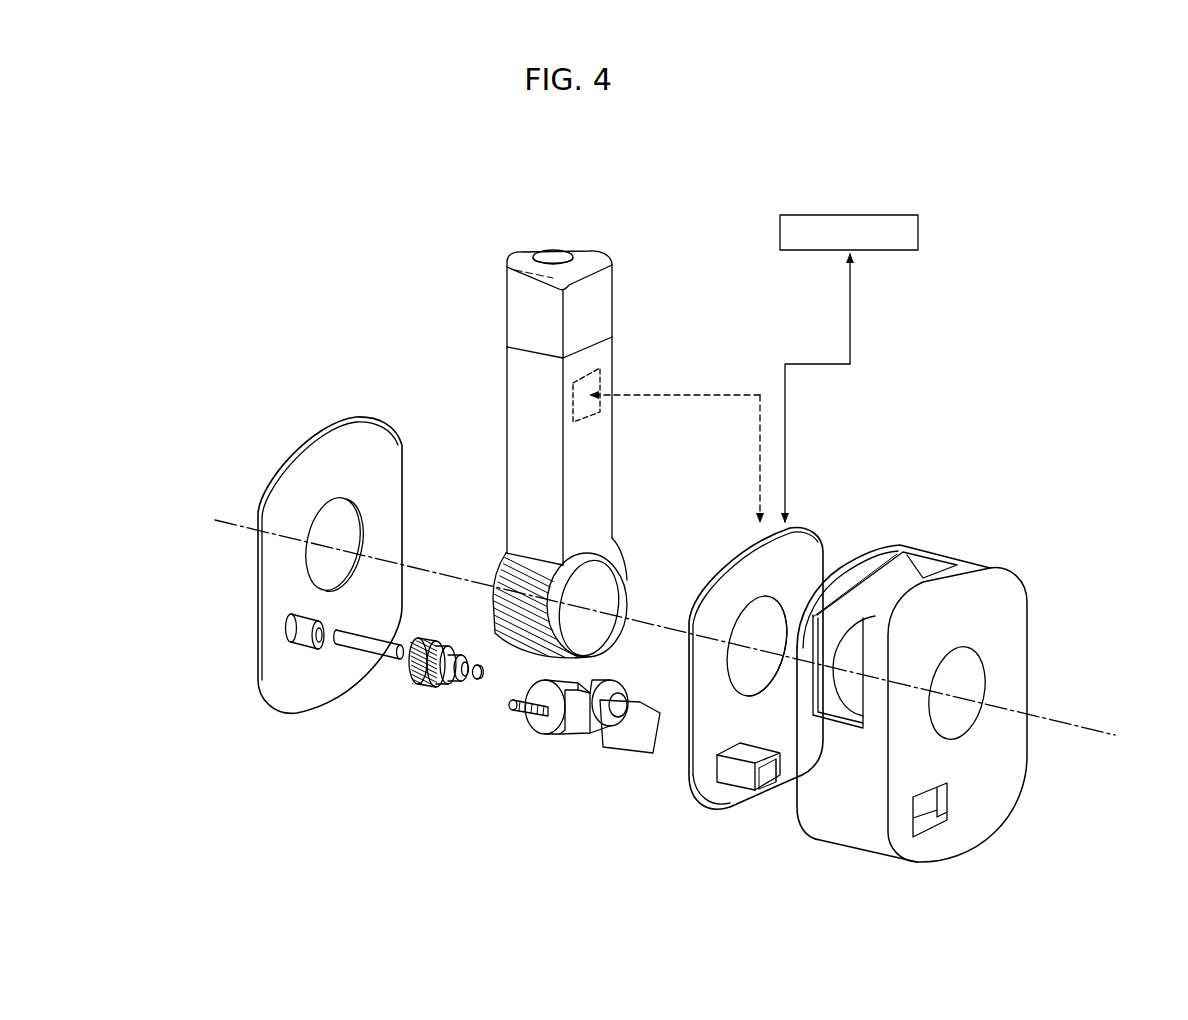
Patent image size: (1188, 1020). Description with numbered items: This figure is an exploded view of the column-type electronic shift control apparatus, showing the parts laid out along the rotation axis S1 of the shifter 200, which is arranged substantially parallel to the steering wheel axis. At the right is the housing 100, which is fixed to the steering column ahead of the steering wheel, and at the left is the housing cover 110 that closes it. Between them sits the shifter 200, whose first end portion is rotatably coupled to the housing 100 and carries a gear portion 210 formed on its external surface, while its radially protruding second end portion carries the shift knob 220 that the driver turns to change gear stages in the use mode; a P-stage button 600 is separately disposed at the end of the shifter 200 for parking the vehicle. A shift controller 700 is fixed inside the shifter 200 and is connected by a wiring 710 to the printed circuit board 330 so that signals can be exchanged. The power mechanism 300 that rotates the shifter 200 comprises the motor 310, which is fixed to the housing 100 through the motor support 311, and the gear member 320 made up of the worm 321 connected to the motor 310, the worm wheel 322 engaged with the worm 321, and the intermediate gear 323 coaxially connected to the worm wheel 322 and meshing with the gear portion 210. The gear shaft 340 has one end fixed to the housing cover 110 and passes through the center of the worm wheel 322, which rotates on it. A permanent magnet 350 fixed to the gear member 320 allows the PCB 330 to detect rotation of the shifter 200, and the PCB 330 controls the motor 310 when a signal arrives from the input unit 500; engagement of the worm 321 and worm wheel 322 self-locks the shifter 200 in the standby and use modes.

The housing 100 is at (1010, 606).
The housing cover 110 is at (345, 440).
The shifter 200 is at (559, 466).
The gear portion 210 is at (492, 612).
The shift knob 220 is at (520, 276).
The power mechanism 300 is at (727, 607).
The motor 310 is at (571, 727).
The motor support 311 is at (636, 750).
The gear member 320 is at (441, 730).
The worm 321 is at (512, 711).
The worm wheel 322 is at (433, 685).
The intermediate gear 323 is at (413, 683).
The printed circuit board 330 is at (808, 552).
The gear shaft 340 is at (350, 652).
The permanent magnet 350 is at (477, 680).
The input unit 500 is at (922, 232).
The P-stage button 600 is at (553, 251).
The shift controller 700 is at (600, 368).
The wiring 710 is at (717, 392).
The rotation axis of the shifter S1 is at (646, 620).